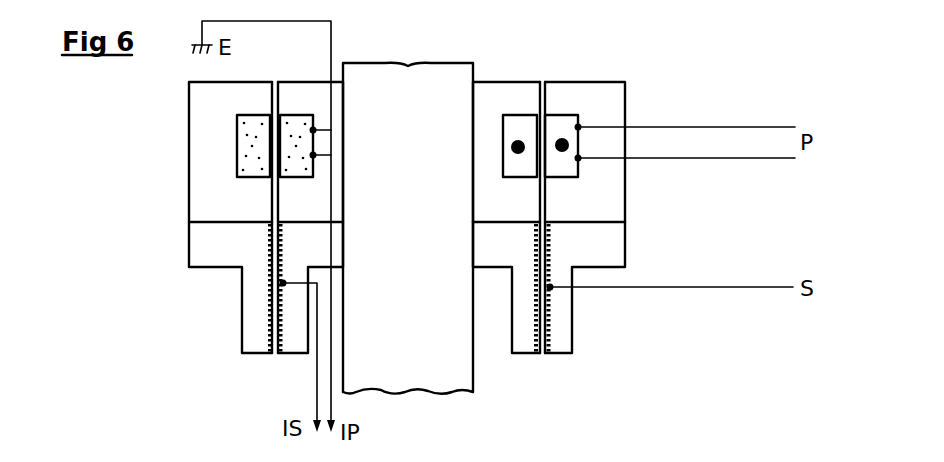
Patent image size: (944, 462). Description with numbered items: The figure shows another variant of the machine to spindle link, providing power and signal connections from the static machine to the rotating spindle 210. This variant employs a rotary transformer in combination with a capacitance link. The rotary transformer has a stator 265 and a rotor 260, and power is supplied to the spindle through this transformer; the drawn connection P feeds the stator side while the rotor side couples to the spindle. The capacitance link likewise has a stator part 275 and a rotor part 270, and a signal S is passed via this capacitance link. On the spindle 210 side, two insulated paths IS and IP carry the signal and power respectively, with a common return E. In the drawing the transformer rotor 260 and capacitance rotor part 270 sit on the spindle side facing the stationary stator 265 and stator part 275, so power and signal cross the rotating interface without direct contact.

The spindle 210 is at (433, 175).
The rotor 260 is at (487, 108).
The stator 265 is at (563, 100).
The rotor part 270 is at (522, 317).
The stator part 275 is at (562, 322).